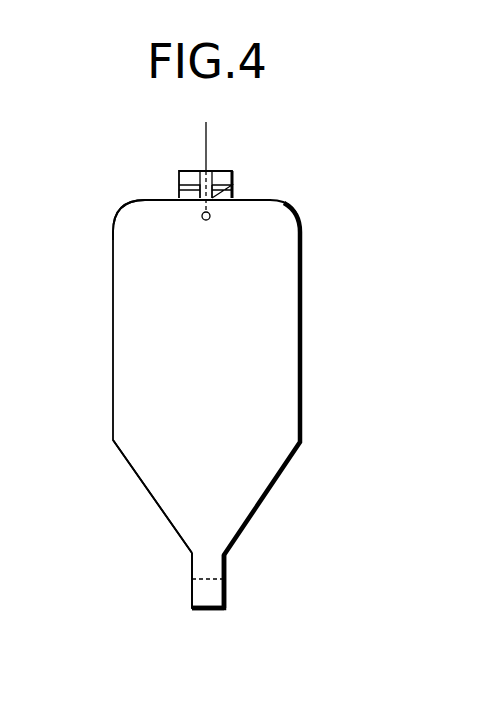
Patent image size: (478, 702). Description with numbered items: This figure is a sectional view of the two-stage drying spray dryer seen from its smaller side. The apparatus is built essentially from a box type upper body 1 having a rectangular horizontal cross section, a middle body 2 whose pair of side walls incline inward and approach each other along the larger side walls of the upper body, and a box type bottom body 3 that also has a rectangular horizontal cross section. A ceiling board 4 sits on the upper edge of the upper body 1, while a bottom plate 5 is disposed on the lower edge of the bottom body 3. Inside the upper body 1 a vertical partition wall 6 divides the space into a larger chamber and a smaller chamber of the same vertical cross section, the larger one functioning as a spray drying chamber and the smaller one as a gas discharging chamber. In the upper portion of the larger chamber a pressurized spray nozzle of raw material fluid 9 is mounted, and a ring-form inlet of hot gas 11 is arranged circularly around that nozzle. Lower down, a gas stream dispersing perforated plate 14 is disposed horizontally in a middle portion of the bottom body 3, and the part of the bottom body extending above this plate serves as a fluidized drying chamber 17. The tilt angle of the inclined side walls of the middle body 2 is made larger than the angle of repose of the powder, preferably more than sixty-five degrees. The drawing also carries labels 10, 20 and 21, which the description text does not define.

The upper body 1 is at (113, 340).
The middle body 2 is at (140, 482).
The bottom body 3 is at (192, 579).
The ceiling board 4 is at (113, 232).
The bottom plate 5 is at (212, 612).
The vertical partition wall 6 is at (211, 396).
The pressurized spray nozzle of raw material fluid 9 is at (210, 217).
The axis line 10 is at (206, 143).
The ring-form inlet of hot gas 11 is at (179, 195).
The gas stream dispersing perforated plate 14 is at (222, 565).
The fluidized drying chamber 17 is at (205, 573).
The cap flange 20 is at (232, 189).
The slot 21 is at (222, 190).